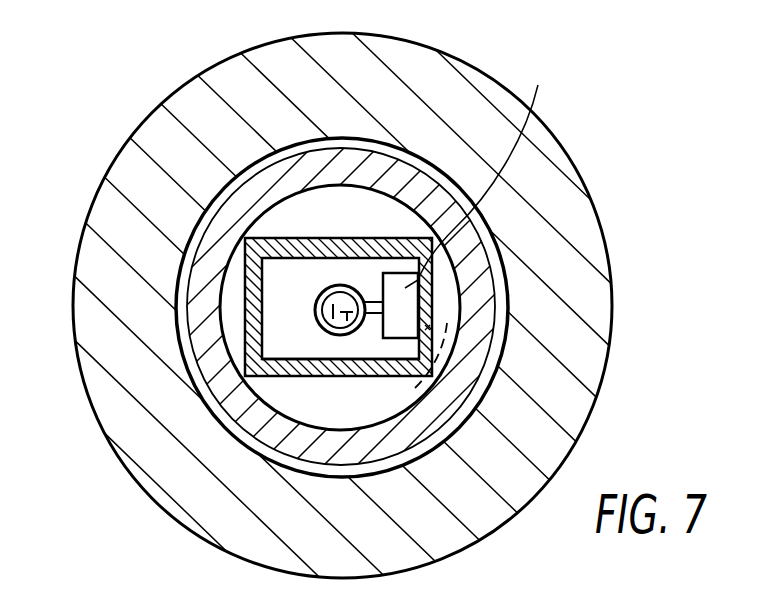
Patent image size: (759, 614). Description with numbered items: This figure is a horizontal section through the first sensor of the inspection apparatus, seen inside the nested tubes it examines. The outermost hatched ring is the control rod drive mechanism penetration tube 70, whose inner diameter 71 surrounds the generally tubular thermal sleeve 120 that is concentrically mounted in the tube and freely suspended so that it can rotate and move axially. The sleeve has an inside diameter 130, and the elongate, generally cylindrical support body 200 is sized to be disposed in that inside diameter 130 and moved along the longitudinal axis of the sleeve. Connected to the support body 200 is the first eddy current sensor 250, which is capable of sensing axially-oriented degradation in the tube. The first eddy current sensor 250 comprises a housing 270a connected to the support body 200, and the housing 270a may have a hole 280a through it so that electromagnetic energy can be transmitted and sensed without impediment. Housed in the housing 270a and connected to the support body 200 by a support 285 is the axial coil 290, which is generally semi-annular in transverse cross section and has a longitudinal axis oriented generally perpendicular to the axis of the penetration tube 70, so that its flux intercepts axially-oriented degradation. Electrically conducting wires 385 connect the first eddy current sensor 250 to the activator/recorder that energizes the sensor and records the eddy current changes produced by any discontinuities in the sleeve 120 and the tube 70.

The control rod drive mechanism penetration tube 70 is at (163, 157).
The inner diameter 71 is at (191, 221).
The inside diameter 130 is at (224, 329).
The thermal sleeve 120 is at (228, 373).
The first eddy current sensor 250 is at (270, 240).
The housing 270a is at (340, 240).
The hole 280a is at (418, 386).
The support body 200 is at (317, 315).
The support 285 is at (382, 297).
The electrically conducting wires 385 is at (343, 330).
The axial coil 290 is at (355, 375).